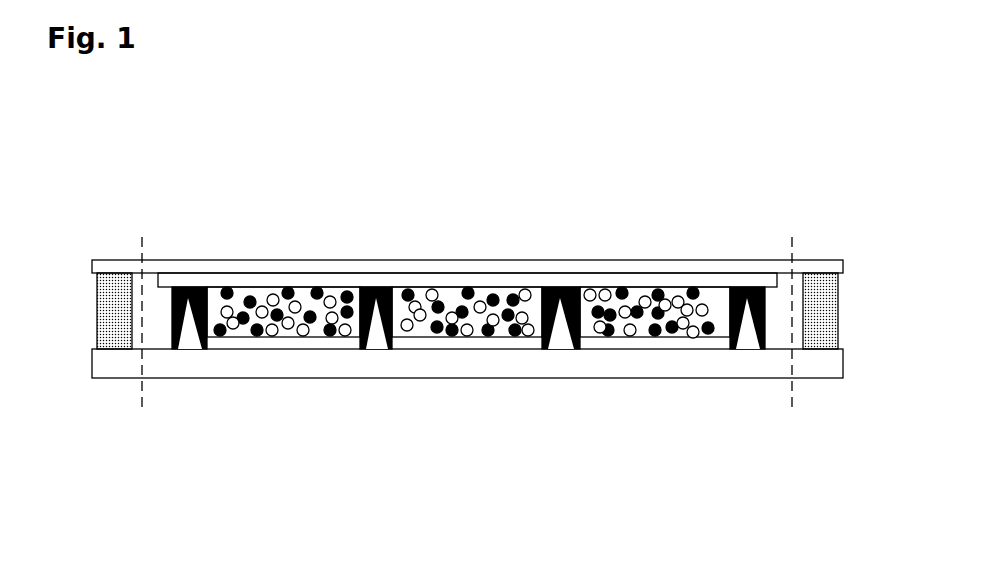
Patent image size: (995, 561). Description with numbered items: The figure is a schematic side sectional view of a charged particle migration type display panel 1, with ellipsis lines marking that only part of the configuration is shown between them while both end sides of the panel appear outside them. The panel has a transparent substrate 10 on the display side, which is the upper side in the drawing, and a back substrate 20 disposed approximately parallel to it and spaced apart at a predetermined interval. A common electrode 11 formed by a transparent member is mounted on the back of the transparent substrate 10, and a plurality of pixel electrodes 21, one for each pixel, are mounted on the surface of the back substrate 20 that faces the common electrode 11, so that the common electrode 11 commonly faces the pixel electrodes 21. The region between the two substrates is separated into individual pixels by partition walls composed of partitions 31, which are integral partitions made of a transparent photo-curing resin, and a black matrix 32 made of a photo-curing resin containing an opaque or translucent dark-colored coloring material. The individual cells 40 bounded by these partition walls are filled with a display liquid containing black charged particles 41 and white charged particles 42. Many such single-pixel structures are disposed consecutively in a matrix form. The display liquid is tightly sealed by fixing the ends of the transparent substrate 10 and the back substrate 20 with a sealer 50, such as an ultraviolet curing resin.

The charged particle migration type display panel 1 is at (459, 111).
The transparent substrate 10 is at (317, 267).
The common electrode 11 is at (417, 282).
The back substrate 20 is at (292, 362).
The pixel electrodes 21 is at (400, 342).
The partitions 31 is at (190, 328).
The black matrix 32 is at (212, 293).
The cells 40 is at (453, 293).
The black charged particles 41 is at (503, 333).
The white charged particles 42 is at (635, 338).
The sealer 50 is at (102, 318).